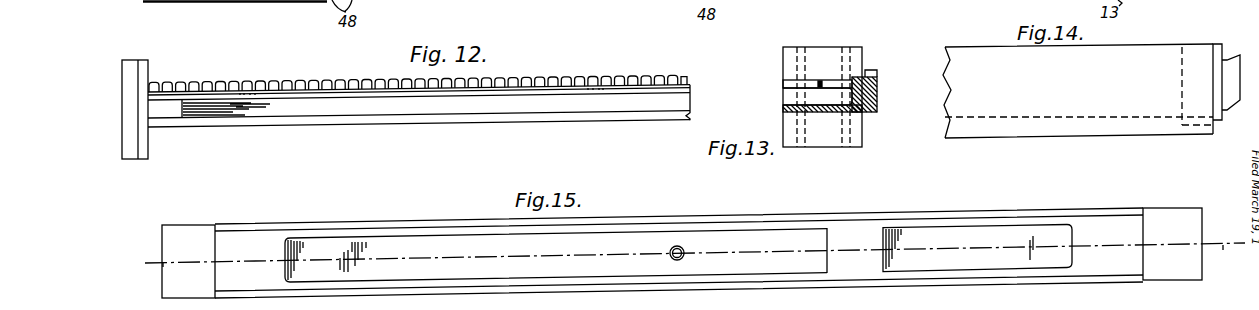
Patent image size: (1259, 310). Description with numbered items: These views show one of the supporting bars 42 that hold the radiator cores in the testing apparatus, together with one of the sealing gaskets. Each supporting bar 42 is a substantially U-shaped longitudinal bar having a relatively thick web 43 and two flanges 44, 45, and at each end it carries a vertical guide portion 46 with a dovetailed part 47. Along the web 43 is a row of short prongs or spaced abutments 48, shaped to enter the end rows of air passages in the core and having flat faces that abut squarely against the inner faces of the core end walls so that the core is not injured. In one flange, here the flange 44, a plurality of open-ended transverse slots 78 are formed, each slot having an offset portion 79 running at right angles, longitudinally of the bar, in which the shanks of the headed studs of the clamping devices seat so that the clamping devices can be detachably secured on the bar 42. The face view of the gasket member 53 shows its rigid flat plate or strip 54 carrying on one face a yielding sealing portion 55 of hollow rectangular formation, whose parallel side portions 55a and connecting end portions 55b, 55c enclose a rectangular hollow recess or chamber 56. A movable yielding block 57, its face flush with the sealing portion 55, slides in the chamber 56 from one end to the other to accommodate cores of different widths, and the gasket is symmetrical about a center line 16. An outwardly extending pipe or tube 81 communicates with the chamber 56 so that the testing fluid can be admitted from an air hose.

In FIG. 15, the center line 16- 16 is at (681, 263).
In FIG. 12, the supporting bar 42 is at (419, 115).
In FIG. 13, the supporting bar 42 is at (806, 97).
In FIG. 14, the supporting bar 42 is at (1078, 103).
In FIG. 12, the web 43 is at (696, 102).
In FIG. 13, the web 43 is at (878, 97).
In FIG. 12, the flange 44 is at (545, 92).
In FIG. 13, the flange 44 is at (848, 86).
In FIG. 12, the flange 45 is at (548, 115).
In FIG. 13, the flange 45 is at (835, 106).
In FIG. 14, the flange 45 is at (1079, 86).
In FIG. 12, the vertical guide portion 46 is at (150, 70).
In FIG. 13, the vertical guide portion 46 is at (790, 60).
In FIG. 14, the vertical guide portion 46 is at (1218, 52).
In FIG. 12, the dovetailed part 47 is at (129, 60).
In FIG. 14, the dovetailed part 47 is at (1238, 77).
In FIG. 12, the prongs or spaced abutments 48 is at (340, 83).
In FIG. 13, the prongs or spaced abutments 48 is at (872, 71).
In FIG. 15, the gasket member 53 is at (708, 244).
In FIG. 15, the plate or strip 54 is at (188, 261).
In FIG. 15, the sealing portion 55 is at (368, 230).
In FIG. 15, the side portions 55a is at (432, 288).
In FIG. 15, the end portions 55b is at (244, 279).
In FIG. 15, the slot portion 55c is at (1000, 248).
In FIG. 15, the chamber 56 is at (605, 267).
In FIG. 15, the yielding block 57 is at (862, 235).
In FIG. 12, the transverse slots 78 is at (247, 100).
In FIG. 13, the transverse slots 78 is at (786, 84).
In FIG. 13, the offset portion 79 is at (820, 81).
In FIG. 15, the pipe or tube 81 is at (684, 249).